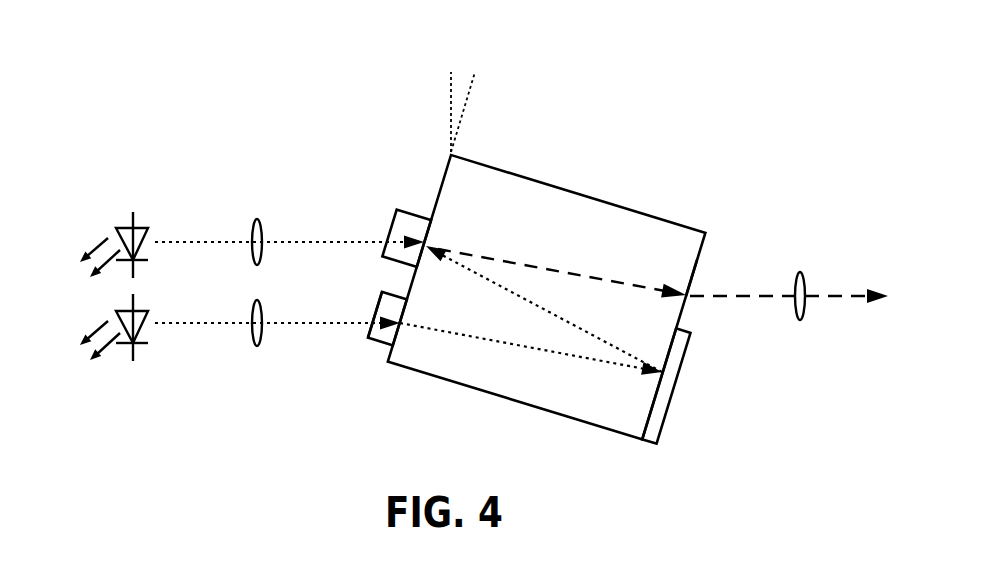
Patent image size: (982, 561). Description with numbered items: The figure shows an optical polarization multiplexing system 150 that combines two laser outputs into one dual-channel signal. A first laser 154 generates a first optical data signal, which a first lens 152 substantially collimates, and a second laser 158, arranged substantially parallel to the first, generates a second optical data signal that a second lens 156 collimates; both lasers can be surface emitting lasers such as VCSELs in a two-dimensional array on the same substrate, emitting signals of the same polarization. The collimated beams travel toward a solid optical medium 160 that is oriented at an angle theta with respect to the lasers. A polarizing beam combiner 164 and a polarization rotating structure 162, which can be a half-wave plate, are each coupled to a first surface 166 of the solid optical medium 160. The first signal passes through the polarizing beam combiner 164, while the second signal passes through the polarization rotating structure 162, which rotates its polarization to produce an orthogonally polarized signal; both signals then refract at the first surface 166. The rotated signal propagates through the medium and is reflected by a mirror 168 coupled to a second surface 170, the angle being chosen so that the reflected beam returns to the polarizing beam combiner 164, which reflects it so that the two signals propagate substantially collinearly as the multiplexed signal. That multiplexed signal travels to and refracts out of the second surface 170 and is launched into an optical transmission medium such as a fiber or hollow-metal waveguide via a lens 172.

The optical polarization multiplexing system 150 is at (186, 63).
The first lens 152 is at (258, 220).
The first laser 154 is at (123, 226).
The second lens 156 is at (259, 345).
The second laser 158 is at (123, 309).
The solid optical medium 160 is at (582, 194).
The polarization rotating structure 162 is at (378, 303).
The polarizing beam combiner 164 is at (422, 214).
The first surface 166 is at (378, 338).
The mirror 168 is at (678, 392).
The second surface 170 is at (696, 264).
The lens 172 is at (798, 272).